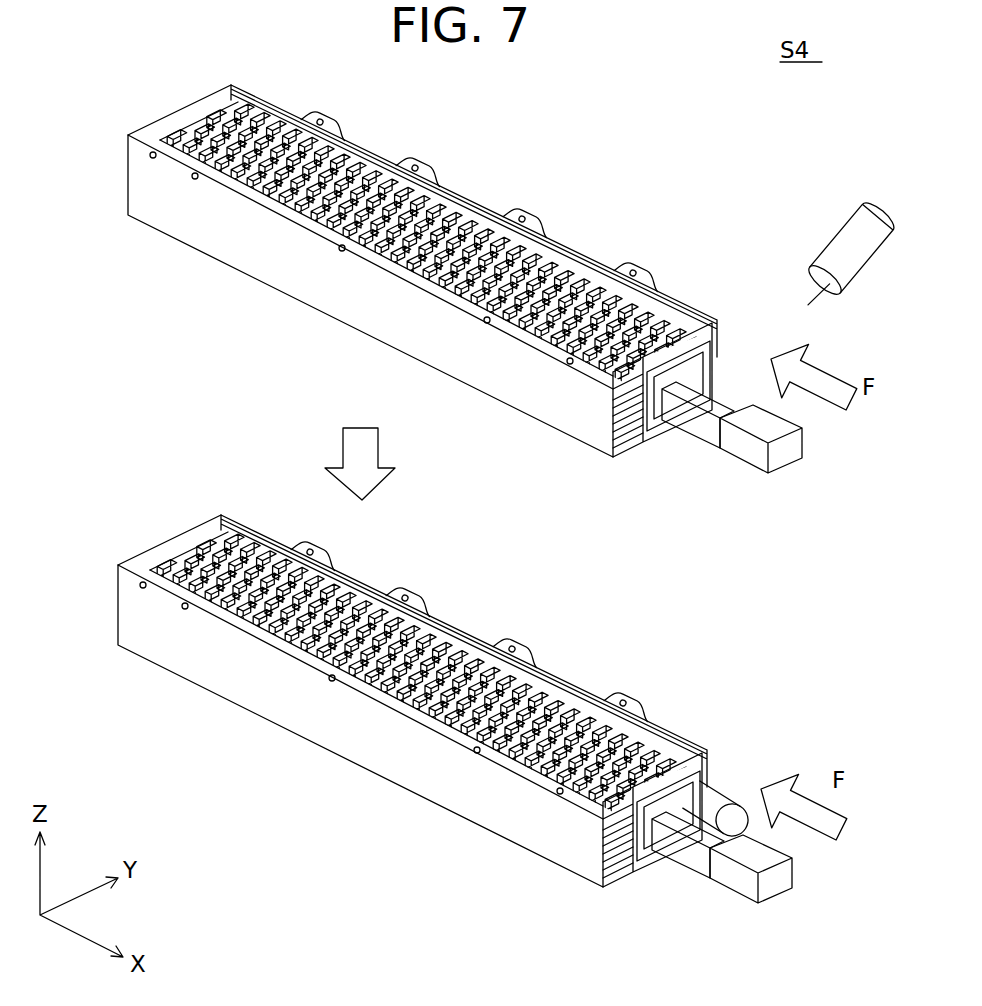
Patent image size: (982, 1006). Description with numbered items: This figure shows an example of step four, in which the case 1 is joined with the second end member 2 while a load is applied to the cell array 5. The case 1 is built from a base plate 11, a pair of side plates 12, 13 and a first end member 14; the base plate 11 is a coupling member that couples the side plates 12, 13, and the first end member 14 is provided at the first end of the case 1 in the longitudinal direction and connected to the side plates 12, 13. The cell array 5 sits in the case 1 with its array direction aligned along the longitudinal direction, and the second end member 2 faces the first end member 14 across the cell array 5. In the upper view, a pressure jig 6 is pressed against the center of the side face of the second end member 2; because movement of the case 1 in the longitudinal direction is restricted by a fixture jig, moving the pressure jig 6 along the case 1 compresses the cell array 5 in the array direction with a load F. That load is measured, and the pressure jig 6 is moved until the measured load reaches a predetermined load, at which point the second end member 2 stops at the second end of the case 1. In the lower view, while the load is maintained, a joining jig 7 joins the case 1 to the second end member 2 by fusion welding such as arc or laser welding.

The case 1 is at (477, 180).
The second end member 2 is at (630, 445).
The cell array 5 is at (573, 245).
The pressure jig 6 is at (792, 477).
The joining jig 7 is at (830, 243).
The base plate 11 is at (667, 437).
The side plate 12 is at (440, 372).
The side plate 13 is at (353, 135).
The first end member 14 is at (182, 114).